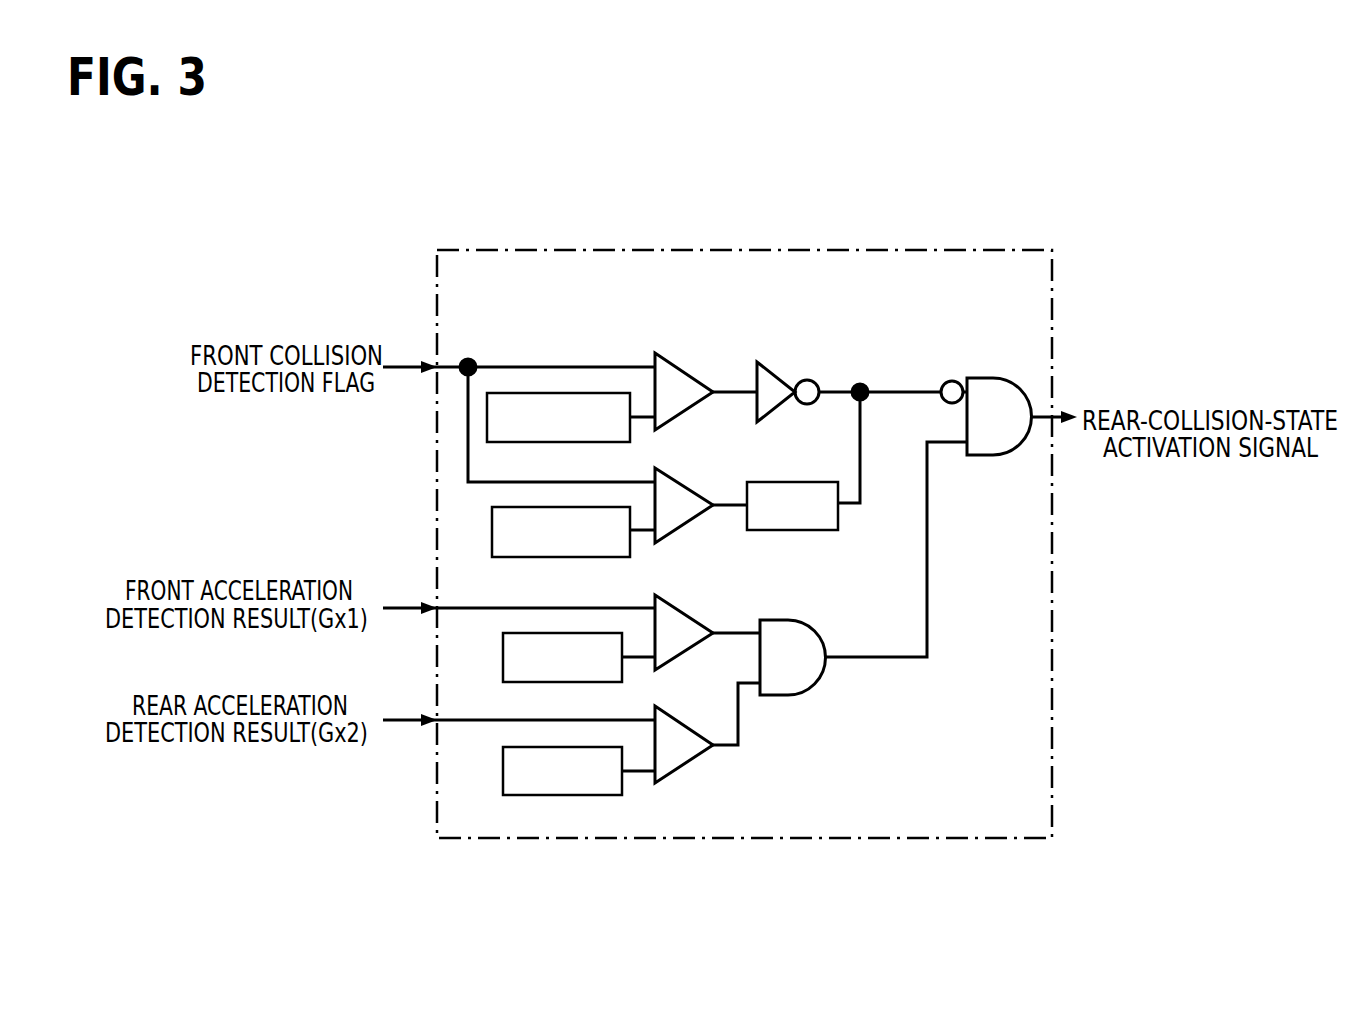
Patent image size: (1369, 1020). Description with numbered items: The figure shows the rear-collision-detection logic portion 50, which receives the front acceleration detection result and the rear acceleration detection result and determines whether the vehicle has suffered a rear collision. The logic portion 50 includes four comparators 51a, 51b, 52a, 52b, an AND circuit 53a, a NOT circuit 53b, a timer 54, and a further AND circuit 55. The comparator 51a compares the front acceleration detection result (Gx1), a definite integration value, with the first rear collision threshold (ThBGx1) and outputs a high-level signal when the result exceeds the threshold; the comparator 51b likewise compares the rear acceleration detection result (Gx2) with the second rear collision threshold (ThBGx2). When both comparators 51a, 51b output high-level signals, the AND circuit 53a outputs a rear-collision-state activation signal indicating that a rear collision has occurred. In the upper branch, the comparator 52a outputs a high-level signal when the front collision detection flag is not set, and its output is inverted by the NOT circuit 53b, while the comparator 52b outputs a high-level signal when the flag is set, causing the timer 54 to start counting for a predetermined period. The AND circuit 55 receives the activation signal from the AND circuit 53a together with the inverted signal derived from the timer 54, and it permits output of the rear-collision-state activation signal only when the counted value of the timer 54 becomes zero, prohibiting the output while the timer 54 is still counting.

The rear-collision-detection logic portion 50 is at (722, 250).
The comparator 51a is at (688, 617).
The comparator 51b is at (693, 758).
The comparator 52a is at (688, 375).
The comparator 52b is at (688, 489).
The AND circuit 53a is at (780, 697).
The NOT circuit 53b is at (776, 377).
The timer 54 is at (810, 531).
The AND circuit 55 is at (985, 378).